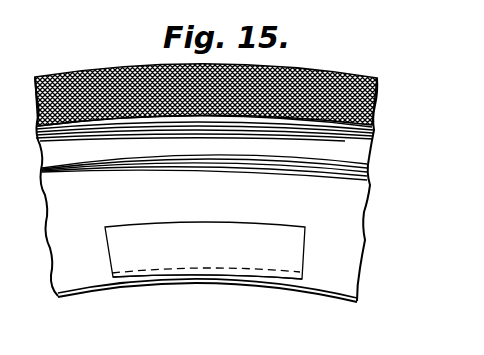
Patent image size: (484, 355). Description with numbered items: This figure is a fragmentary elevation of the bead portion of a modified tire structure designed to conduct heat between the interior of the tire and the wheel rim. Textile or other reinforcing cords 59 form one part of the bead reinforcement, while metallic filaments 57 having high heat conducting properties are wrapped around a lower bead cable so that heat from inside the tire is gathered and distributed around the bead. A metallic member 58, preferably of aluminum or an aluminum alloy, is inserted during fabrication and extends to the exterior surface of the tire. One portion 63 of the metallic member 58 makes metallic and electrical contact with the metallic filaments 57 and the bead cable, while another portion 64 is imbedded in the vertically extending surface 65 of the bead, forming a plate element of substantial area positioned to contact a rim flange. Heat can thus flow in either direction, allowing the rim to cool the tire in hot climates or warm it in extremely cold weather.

The metallic filaments 57 is at (330, 78).
The reinforcing cords 59 is at (103, 72).
The metallic member 58 is at (233, 245).
The portion of metallic member 63 is at (277, 273).
The portion of metallic member 64 is at (157, 247).
The vertically extending surface 65 is at (80, 273).